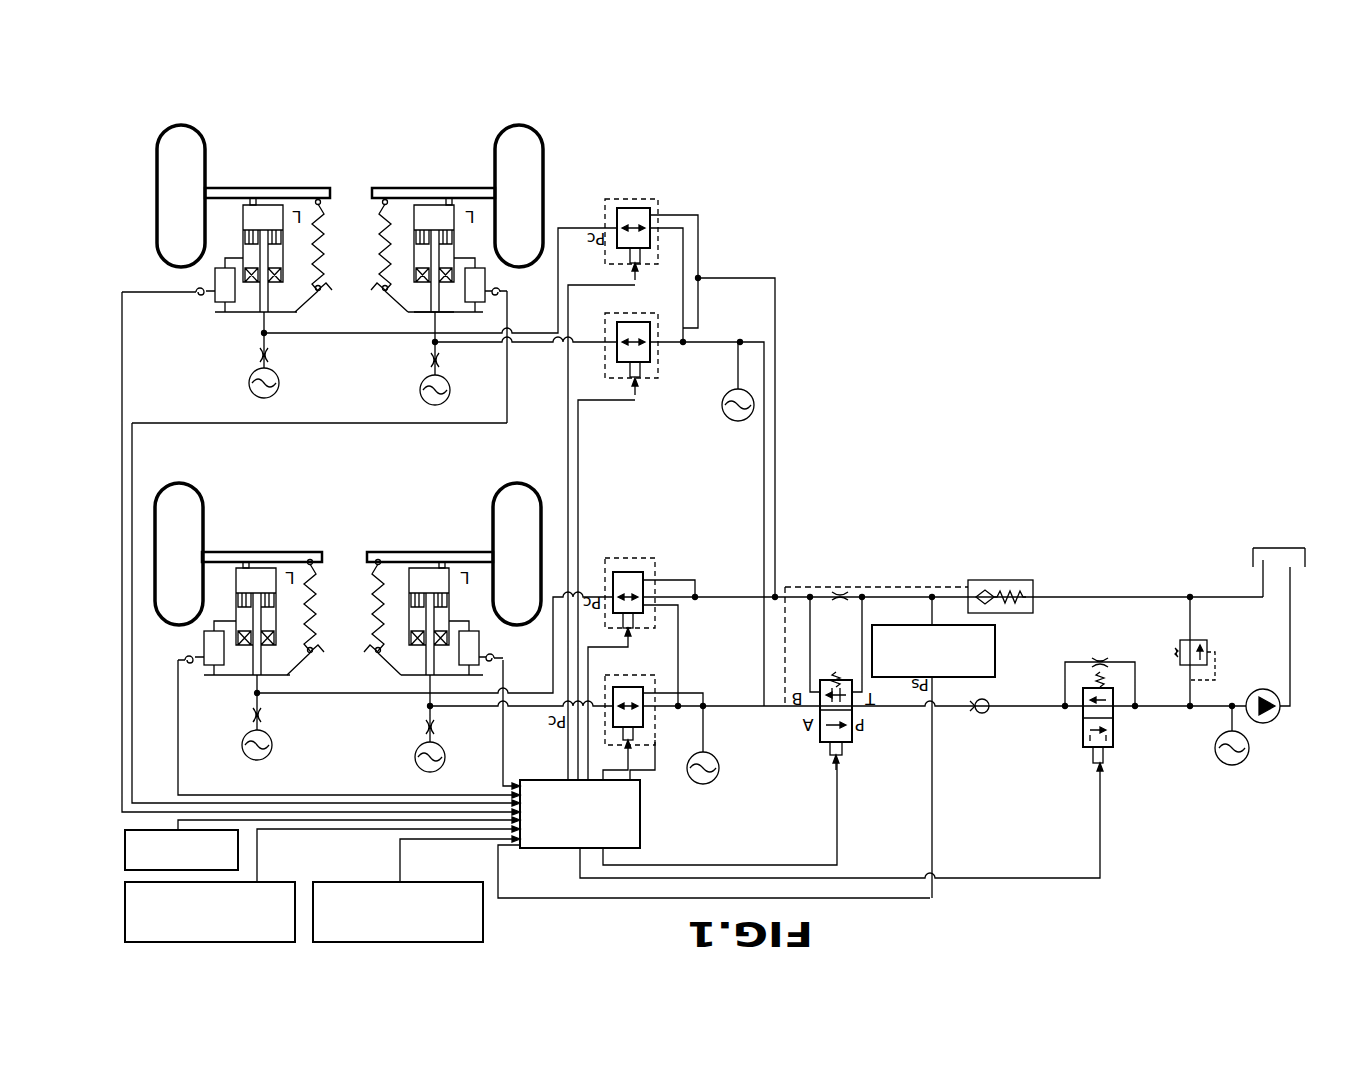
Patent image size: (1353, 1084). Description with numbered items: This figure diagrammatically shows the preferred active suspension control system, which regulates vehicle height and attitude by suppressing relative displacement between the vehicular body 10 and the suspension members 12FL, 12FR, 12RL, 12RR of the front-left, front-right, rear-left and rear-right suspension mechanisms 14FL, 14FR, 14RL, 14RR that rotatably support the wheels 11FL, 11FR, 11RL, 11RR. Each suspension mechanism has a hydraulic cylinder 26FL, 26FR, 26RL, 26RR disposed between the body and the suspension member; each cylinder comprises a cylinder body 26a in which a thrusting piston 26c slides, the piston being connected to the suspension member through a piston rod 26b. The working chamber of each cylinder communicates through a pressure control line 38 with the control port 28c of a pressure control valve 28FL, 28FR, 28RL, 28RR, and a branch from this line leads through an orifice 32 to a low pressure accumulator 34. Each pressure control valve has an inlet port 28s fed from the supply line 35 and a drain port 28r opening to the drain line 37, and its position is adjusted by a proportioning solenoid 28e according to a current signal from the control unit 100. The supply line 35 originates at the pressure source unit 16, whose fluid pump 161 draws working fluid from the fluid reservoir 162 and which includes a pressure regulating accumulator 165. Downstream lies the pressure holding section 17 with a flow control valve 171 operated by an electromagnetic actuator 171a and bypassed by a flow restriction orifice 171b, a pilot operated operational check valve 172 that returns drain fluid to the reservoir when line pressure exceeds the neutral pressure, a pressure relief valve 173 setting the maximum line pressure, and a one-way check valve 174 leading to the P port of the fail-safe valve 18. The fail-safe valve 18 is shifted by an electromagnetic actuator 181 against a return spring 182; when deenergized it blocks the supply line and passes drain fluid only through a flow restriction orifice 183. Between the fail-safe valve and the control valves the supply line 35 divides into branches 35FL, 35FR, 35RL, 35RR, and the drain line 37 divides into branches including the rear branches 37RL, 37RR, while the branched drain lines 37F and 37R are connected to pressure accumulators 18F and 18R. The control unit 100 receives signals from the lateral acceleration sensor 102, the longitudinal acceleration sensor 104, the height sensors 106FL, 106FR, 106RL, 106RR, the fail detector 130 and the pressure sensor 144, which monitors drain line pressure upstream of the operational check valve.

The vehicular body 10 is at (225, 315).
The rear-right wheel 11RR is at (205, 137).
The rear-left wheel 11RL is at (495, 137).
The front-right wheel 11FR is at (203, 495).
The front-left wheel 11FL is at (493, 495).
The rear-right suspension member 12RR is at (283, 220).
The rear-left suspension member 12RL is at (382, 190).
The front-right suspension member 12FR is at (290, 552).
The front-left suspension member 12FL is at (382, 552).
The rear-right suspension mechanism 14RR is at (222, 227).
The rear-left suspension mechanism 14RL is at (480, 235).
The front-right suspension mechanism 14FR is at (210, 598).
The front-left suspension mechanism 14FL is at (480, 600).
The pressure source unit 16 is at (805, 268).
The pressure holding section 17 is at (1058, 838).
The fail-safe valve 18 is at (820, 726).
The rear pressure accumulator 18R is at (738, 421).
The front pressure accumulator 18F is at (710, 784).
The rear-right hydraulic cylinder 26RR is at (252, 195).
The rear-left hydraulic cylinder 26RL is at (428, 195).
The front-right hydraulic cylinder 26FR is at (247, 562).
The front-left hydraulic cylinder 26FL is at (428, 562).
The cylinder body 26a is at (347, 484).
The piston rod 26b is at (345, 527).
The thrusting piston 26c is at (318, 230).
The rear-right pressure control valve 28RR is at (637, 208).
The rear-left pressure control valve 28RL is at (637, 322).
The front-right pressure control valve 28FR is at (637, 572).
The front-left pressure control valve 28FL is at (637, 687).
The drain port 28r is at (650, 212).
The proportioning solenoid 28e is at (650, 228).
The control port 28c is at (622, 246).
The inlet port 28s is at (655, 348).
The orifice 32 is at (257, 355).
The pressure accumulator 34 is at (252, 389).
The supply line 35 is at (1178, 705).
The rear-right supply branch 35RR is at (700, 228).
The rear-left supply branch 35RL is at (695, 344).
The front-right supply branch 35FR is at (678, 623).
The front-left supply branch 35FL is at (690, 710).
The drain line 37 is at (1163, 597).
The rear-right drain branch 37RR is at (700, 215).
The rear-left drain branch 37RL is at (690, 320).
The rear branched drain line 37R is at (775, 415).
The front branched drain line 37F is at (738, 596).
The pressure control line 38 is at (348, 333).
The control unit 100 is at (543, 848).
The lateral acceleration sensor 102 is at (483, 897).
The longitudinal acceleration sensor 104 is at (303, 882).
The rear-right height sensor 106RR is at (215, 271).
The rear-left height sensor 106RL is at (485, 275).
The front-right height sensor 106FR is at (204, 636).
The front-left height sensor 106FL is at (479, 640).
The fail detector 130 is at (238, 850).
The pressure sensor 144 is at (995, 652).
The fluid pump 161 is at (1270, 720).
The fluid reservoir 162 is at (1253, 558).
The pressure regulating accumulator 165 is at (1227, 765).
The flow control valve 171 is at (1083, 732).
The electromagnetic actuator 171a is at (1090, 777).
The flow restriction orifice 171b is at (1098, 667).
The operational check valve 172 is at (998, 580).
The pressure relief valve 173 is at (1187, 638).
The one-way check valve 174 is at (984, 712).
The electromagnetic actuator 181 is at (842, 752).
The return spring 182 is at (838, 670).
The flow restriction orifice 183 is at (840, 590).